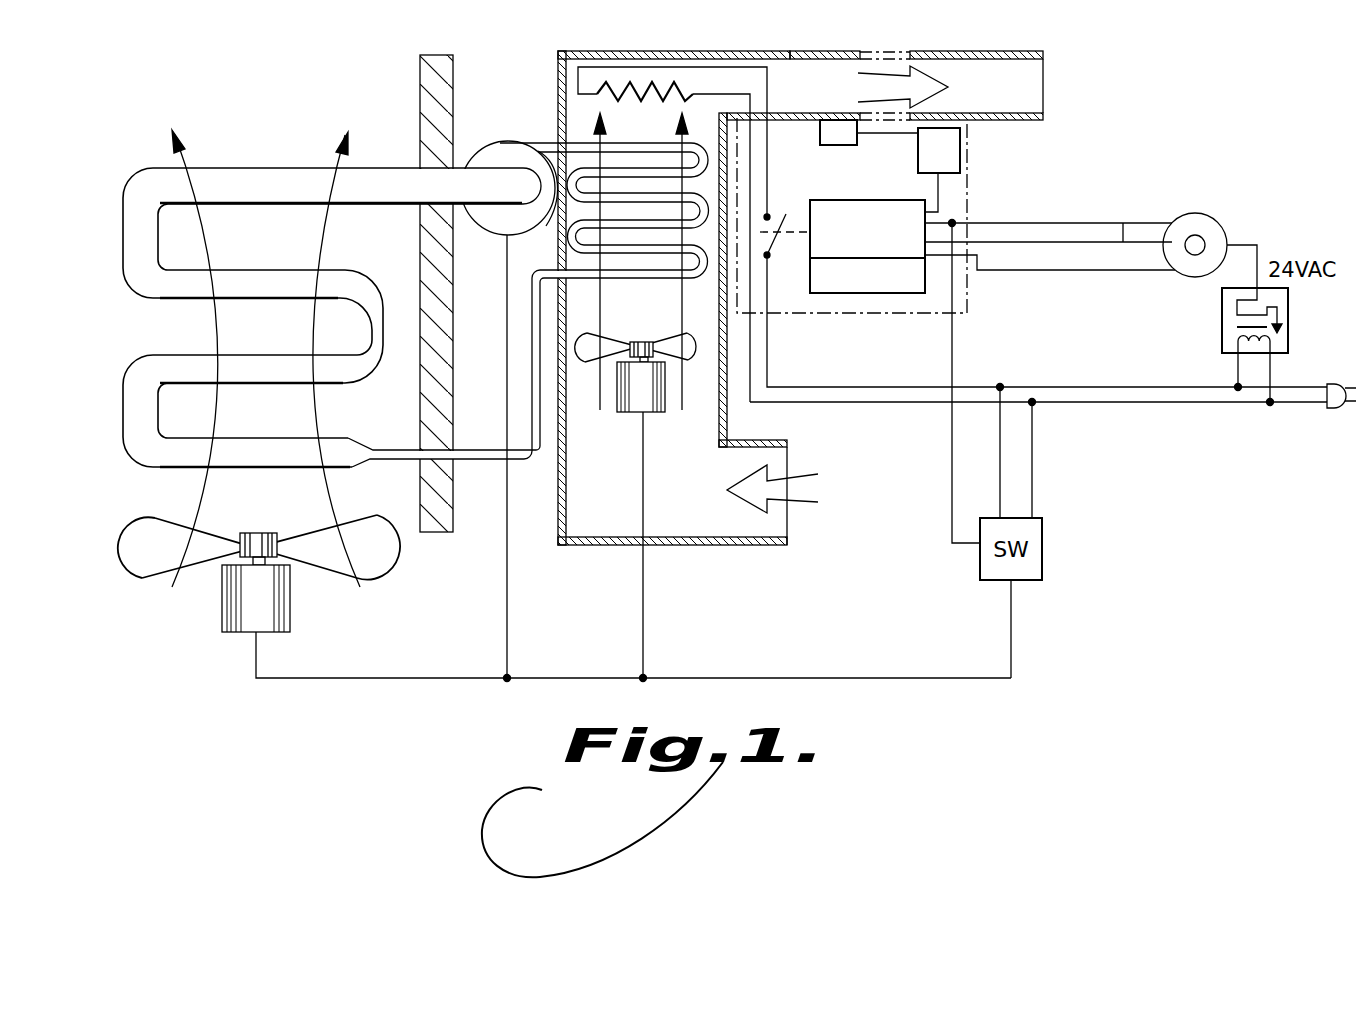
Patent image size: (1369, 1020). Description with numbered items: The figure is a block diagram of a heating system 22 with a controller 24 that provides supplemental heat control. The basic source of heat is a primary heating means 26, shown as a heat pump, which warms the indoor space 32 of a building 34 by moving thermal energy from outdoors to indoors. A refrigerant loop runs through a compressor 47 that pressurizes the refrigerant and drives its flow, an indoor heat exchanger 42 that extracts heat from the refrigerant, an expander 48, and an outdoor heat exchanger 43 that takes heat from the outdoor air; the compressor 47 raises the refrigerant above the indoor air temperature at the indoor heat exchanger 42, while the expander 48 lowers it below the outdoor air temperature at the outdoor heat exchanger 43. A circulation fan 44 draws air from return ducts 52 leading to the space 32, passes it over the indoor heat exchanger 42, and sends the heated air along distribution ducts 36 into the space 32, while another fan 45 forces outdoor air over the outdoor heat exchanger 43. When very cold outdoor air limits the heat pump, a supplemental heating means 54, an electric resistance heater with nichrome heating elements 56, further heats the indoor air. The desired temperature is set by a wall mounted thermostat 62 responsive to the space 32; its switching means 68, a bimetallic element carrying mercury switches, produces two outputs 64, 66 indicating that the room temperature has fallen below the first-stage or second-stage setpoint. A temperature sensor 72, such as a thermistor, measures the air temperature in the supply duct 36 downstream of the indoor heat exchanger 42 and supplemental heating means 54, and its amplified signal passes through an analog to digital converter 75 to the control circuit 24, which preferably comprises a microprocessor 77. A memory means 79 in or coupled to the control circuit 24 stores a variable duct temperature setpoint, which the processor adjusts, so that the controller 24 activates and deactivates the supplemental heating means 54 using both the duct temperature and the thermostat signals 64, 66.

The heating system 22 is at (826, 432).
The controller 24 is at (967, 172).
The primary heating means 26 is at (555, 582).
The indoor space 32 is at (1180, 163).
The building 34 is at (463, 86).
The ducts 36 is at (1008, 54).
The indoor heat exchanger 42 is at (582, 240).
The outdoor heat exchanger 43 is at (337, 270).
The circulation fan 44 is at (606, 340).
The fan 45 is at (371, 565).
The compressor 47 is at (503, 127).
The expander 48 is at (356, 447).
The return ducts 52 is at (752, 546).
The supplemental heating means 54 is at (672, 74).
The heating elements 56 is at (608, 104).
The thermostat 62 is at (1208, 215).
The first thermostat output 64 is at (1123, 223).
The second thermostat output 66 is at (1133, 242).
The switching means 68 is at (1155, 272).
The temperature sensor 72 is at (822, 145).
The analog to digital converter 75 is at (960, 134).
The microprocessor 77 is at (893, 205).
The memory means 79 is at (908, 296).